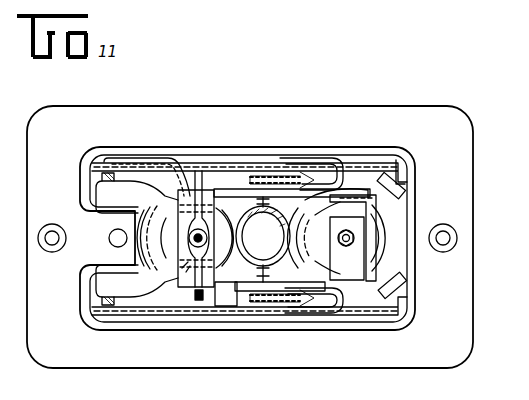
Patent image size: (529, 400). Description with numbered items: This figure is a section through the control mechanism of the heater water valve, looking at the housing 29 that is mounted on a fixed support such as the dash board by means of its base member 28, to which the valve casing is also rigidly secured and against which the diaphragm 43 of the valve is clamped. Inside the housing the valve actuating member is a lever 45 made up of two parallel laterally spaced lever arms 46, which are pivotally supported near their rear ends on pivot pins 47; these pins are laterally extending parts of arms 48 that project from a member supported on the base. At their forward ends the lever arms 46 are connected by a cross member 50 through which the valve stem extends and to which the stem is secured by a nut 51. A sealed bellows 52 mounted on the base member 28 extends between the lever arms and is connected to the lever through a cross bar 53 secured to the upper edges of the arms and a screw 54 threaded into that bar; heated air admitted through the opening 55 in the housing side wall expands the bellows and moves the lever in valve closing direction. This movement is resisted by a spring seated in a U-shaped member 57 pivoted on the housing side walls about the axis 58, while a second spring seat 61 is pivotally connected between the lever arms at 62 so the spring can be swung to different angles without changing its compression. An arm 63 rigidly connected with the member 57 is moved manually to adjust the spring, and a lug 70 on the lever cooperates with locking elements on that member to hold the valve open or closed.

The base member 28 is at (463, 178).
The housing 29 is at (400, 168).
The diaphragm 43 is at (373, 253).
The lever 45 is at (366, 178).
The lever arms 46 is at (252, 189).
The pivot pins 47 is at (80, 299).
The arms 48 is at (160, 163).
The cross member 50 is at (363, 220).
The nut 51 is at (338, 240).
The bellows 52 is at (160, 213).
The cross bar 53 is at (189, 263).
The screw 54 is at (193, 240).
The opening 55 is at (137, 165).
The U-shaped member 57 is at (262, 178).
The axis 58 is at (303, 160).
The second spring seat 61 is at (284, 246).
The pivotal connection 62 is at (277, 281).
The arm 63 is at (273, 312).
The lug 70 is at (222, 305).